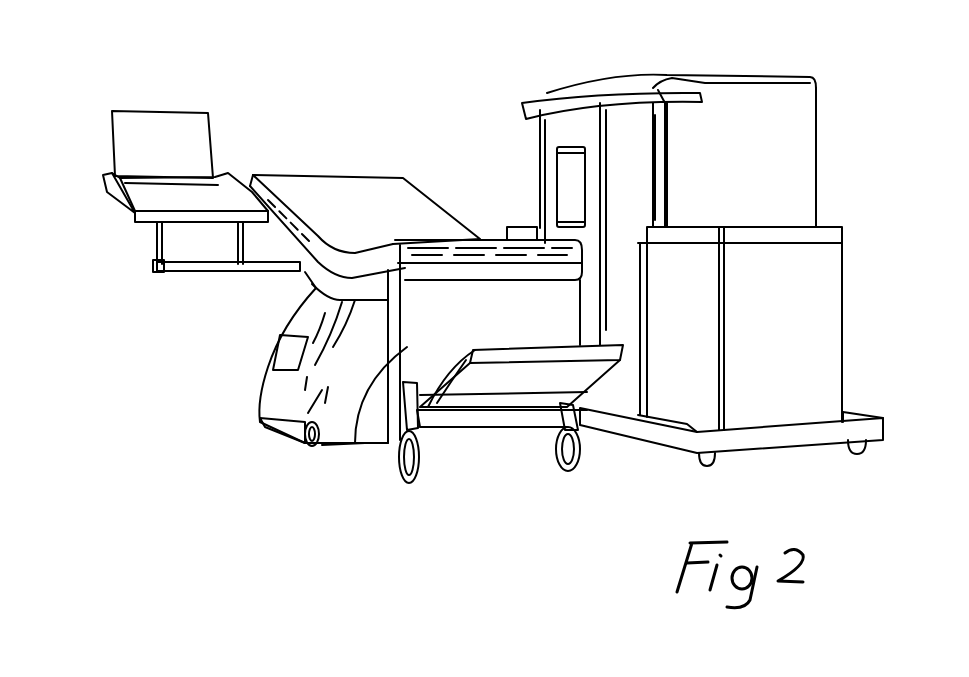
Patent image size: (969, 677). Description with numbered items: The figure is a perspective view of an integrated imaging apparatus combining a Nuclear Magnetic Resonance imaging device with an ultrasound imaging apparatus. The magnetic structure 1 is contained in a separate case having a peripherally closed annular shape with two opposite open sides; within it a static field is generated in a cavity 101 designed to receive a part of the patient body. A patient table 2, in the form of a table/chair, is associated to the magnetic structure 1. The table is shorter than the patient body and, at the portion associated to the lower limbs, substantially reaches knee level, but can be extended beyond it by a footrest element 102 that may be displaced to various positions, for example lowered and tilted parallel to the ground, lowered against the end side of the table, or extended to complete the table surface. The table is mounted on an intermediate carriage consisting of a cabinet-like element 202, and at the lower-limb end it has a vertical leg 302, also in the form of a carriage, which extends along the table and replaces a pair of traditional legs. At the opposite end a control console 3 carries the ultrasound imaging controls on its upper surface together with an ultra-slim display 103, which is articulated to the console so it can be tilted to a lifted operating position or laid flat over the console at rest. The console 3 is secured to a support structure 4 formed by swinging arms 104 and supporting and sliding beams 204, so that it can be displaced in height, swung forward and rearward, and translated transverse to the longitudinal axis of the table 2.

The magnetic structure 1 is at (824, 132).
The cavity 101 is at (572, 168).
The footrest element 102 is at (512, 378).
The patient table 2 is at (422, 187).
The cabinet-like element 202 is at (277, 414).
The vertical leg 302 is at (413, 342).
The control console 3 is at (115, 210).
The ultra-slim display 103 is at (186, 120).
The swinging arms 104 is at (157, 242).
The support structure 4 is at (210, 275).
The supporting and sliding beams 204 is at (187, 270).